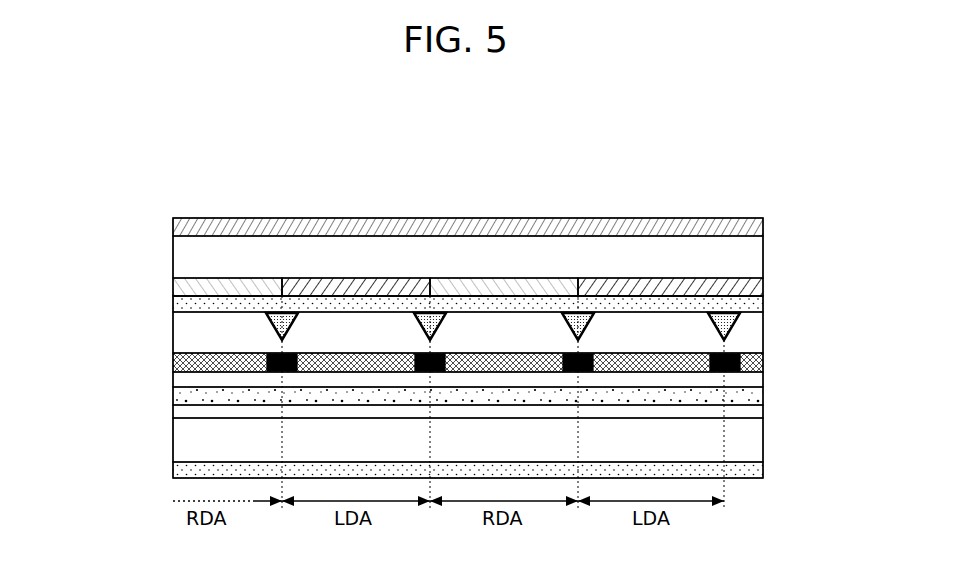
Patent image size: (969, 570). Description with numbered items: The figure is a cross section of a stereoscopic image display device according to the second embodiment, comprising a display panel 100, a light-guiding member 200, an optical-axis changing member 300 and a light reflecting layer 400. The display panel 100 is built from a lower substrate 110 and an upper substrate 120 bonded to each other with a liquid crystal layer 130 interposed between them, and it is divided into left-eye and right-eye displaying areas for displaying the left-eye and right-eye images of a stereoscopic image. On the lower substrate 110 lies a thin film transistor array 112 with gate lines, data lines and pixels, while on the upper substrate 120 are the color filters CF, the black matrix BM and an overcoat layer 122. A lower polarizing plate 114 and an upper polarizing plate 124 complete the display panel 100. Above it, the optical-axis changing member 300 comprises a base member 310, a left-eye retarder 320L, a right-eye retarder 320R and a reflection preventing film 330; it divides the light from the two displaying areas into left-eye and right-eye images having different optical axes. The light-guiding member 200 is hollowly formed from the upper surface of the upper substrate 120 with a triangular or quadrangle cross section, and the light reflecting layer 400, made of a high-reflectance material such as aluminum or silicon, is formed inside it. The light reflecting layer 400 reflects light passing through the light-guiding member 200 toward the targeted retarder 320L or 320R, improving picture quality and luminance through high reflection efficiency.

The optical-axis changing member 300 is at (568, 152).
The reflection preventing film 330 is at (523, 232).
The base member 310 is at (574, 263).
The left-eye retarder 320L is at (390, 283).
The right-eye retarder 320R is at (473, 283).
The display panel 100 is at (86, 290).
The upper polarizing plate 124 is at (173, 303).
The upper substrate 120 is at (173, 332).
The light reflecting layer 400 is at (745, 317).
The light-guiding member 200 is at (742, 338).
The color filters CF is at (173, 361).
The black matrix BM is at (763, 362).
The overcoat layer 122 is at (173, 381).
The liquid crystal layer 130 is at (763, 397).
The thin film transistor array 112 is at (173, 415).
The lower substrate 110 is at (763, 440).
The lower polarizing plate 114 is at (173, 470).